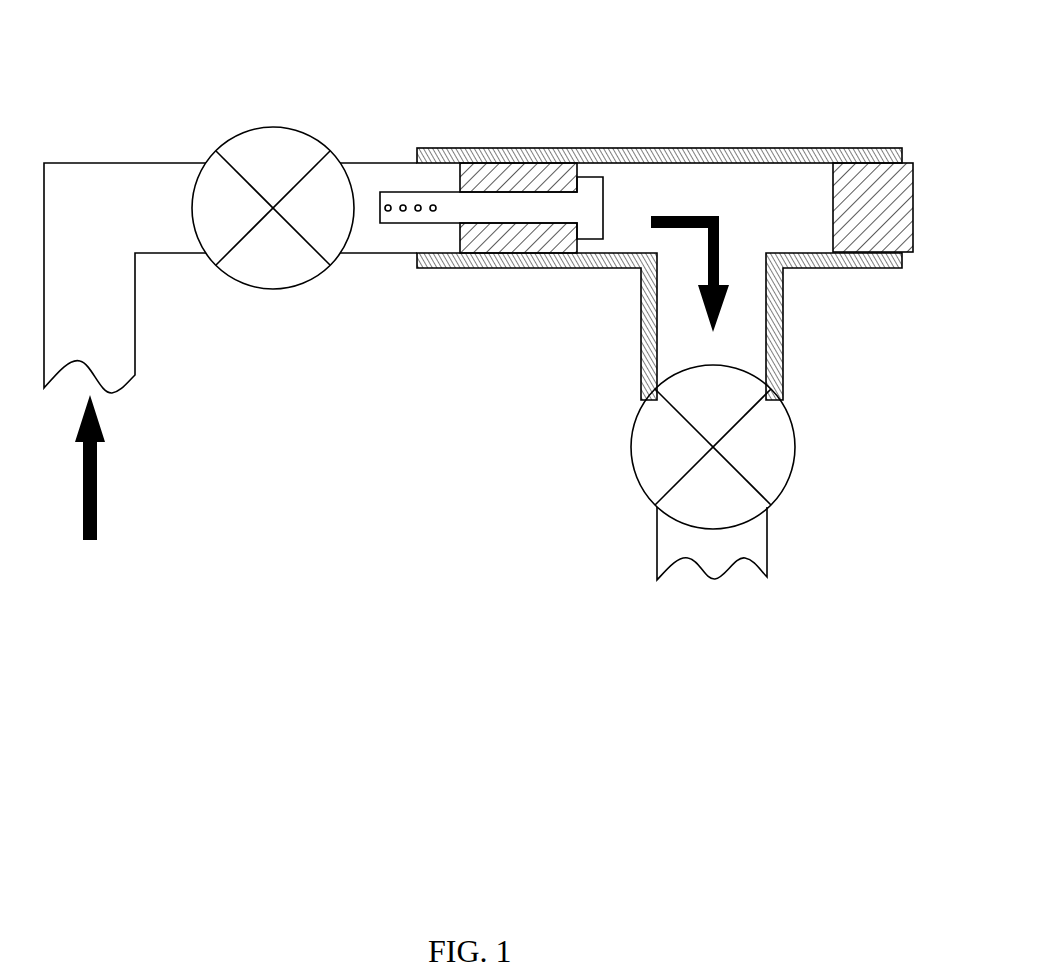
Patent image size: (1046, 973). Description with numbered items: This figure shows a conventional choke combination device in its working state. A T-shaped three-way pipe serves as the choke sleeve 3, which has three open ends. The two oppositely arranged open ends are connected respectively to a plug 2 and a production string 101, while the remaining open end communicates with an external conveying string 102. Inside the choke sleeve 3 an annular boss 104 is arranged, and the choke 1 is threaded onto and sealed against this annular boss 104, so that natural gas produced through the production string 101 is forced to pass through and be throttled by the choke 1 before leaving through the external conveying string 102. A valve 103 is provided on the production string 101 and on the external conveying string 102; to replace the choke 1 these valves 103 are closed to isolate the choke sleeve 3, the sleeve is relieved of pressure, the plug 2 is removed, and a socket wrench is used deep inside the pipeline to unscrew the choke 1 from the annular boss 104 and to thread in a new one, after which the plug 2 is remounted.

The choke 1 is at (457, 207).
The plug 2 is at (867, 208).
The choke sleeve 3 is at (658, 156).
The production string 101 is at (135, 318).
The external conveying string 102 is at (657, 542).
The valve 103 is at (630, 445).
The annular boss 104 is at (523, 180).